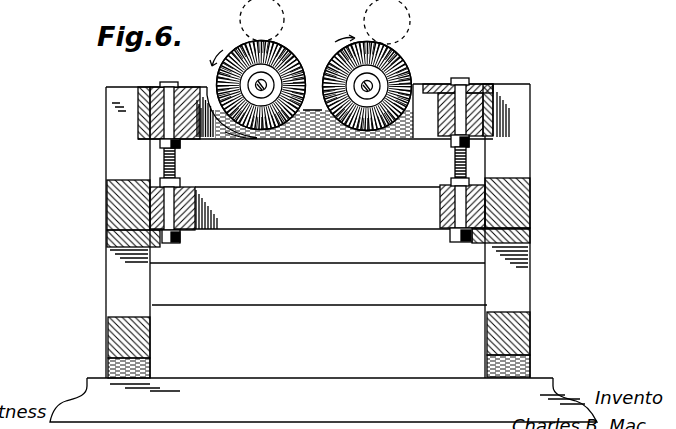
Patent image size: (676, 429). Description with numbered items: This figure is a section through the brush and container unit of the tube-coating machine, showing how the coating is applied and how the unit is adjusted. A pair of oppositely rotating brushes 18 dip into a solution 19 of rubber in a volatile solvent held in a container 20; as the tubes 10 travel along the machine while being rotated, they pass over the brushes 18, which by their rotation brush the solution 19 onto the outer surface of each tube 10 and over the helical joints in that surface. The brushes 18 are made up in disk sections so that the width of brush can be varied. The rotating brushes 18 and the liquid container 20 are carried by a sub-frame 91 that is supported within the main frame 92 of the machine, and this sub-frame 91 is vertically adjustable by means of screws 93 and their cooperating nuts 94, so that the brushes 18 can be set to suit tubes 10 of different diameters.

The tube 10 is at (411, 28).
The brush 18 is at (292, 63).
The solution 19 is at (278, 139).
The container 20 is at (325, 135).
The sub-frame 91 is at (483, 86).
The main frame 92 is at (530, 152).
The screw 93 is at (457, 154).
The nut 94 is at (181, 146).